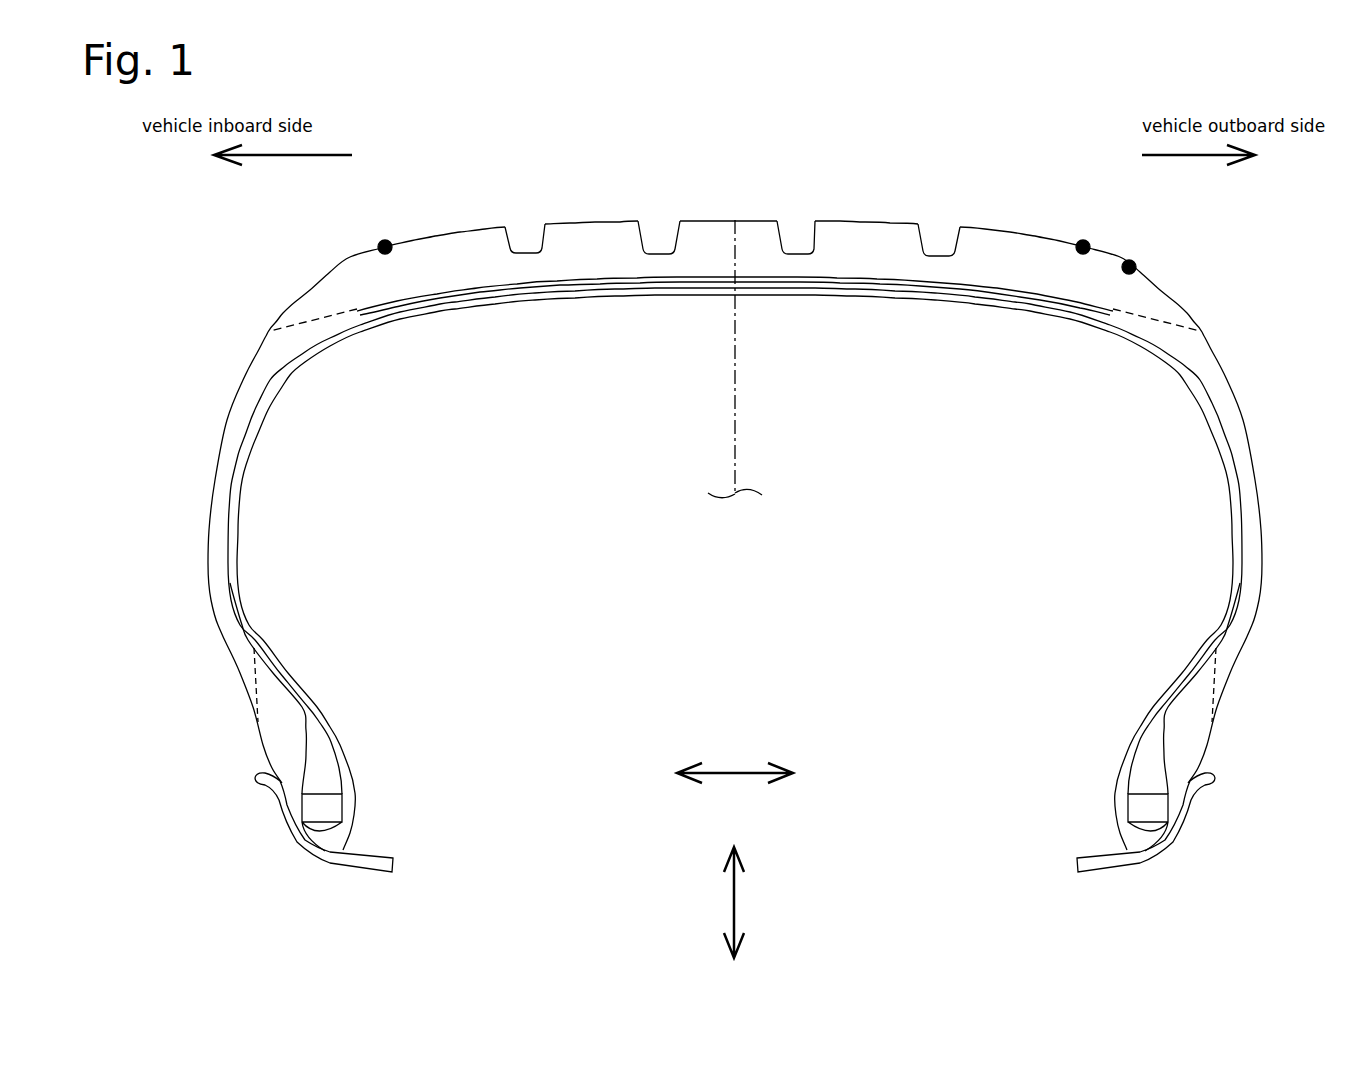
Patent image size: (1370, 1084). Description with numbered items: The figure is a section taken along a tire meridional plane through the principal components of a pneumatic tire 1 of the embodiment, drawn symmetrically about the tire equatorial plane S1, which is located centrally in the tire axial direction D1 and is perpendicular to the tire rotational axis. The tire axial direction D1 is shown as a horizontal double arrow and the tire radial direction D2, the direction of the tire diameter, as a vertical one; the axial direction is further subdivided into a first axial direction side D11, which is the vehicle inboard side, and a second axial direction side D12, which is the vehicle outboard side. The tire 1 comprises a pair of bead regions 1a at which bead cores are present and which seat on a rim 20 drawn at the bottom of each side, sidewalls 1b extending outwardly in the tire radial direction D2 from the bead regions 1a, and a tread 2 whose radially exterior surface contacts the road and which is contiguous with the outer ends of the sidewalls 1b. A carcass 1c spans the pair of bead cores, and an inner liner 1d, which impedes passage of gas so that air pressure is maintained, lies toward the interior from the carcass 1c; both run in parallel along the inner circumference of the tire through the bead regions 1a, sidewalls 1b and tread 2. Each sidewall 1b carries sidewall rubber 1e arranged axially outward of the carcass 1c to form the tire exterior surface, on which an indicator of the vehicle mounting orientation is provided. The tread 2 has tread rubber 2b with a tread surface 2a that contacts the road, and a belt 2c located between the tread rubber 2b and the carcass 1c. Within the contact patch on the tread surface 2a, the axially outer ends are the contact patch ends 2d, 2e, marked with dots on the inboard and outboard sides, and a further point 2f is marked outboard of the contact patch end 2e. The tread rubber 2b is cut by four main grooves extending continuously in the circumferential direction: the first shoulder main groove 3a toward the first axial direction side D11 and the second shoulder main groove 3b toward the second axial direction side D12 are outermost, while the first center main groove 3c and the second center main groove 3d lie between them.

The pneumatic tire 1 is at (1268, 220).
The bead region 1a is at (250, 754).
The sidewall 1b is at (212, 414).
The carcass 1c is at (483, 298).
The inner liner 1d is at (885, 298).
The sidewall rubber 1e is at (218, 495).
The tread 2 is at (610, 213).
The tread surface 2a is at (462, 228).
The tread rubber 2b is at (855, 223).
The belt 2c is at (607, 282).
The contact patch end 2d is at (385, 243).
The contact patch end 2e is at (1083, 240).
The outboard tread end point 2f is at (1129, 261).
The first shoulder main groove 3a is at (525, 224).
The second shoulder main groove 3b is at (937, 226).
The first center main groove 3c is at (658, 224).
The second center main groove 3d is at (795, 224).
The rim 20 is at (330, 857).
The tire equatorial plane S1 is at (737, 434).
The tire axial direction D1 is at (735, 785).
The tire radial direction D2 is at (748, 902).
The first axial direction side D11 is at (260, 156).
The second axial direction side D12 is at (1223, 156).